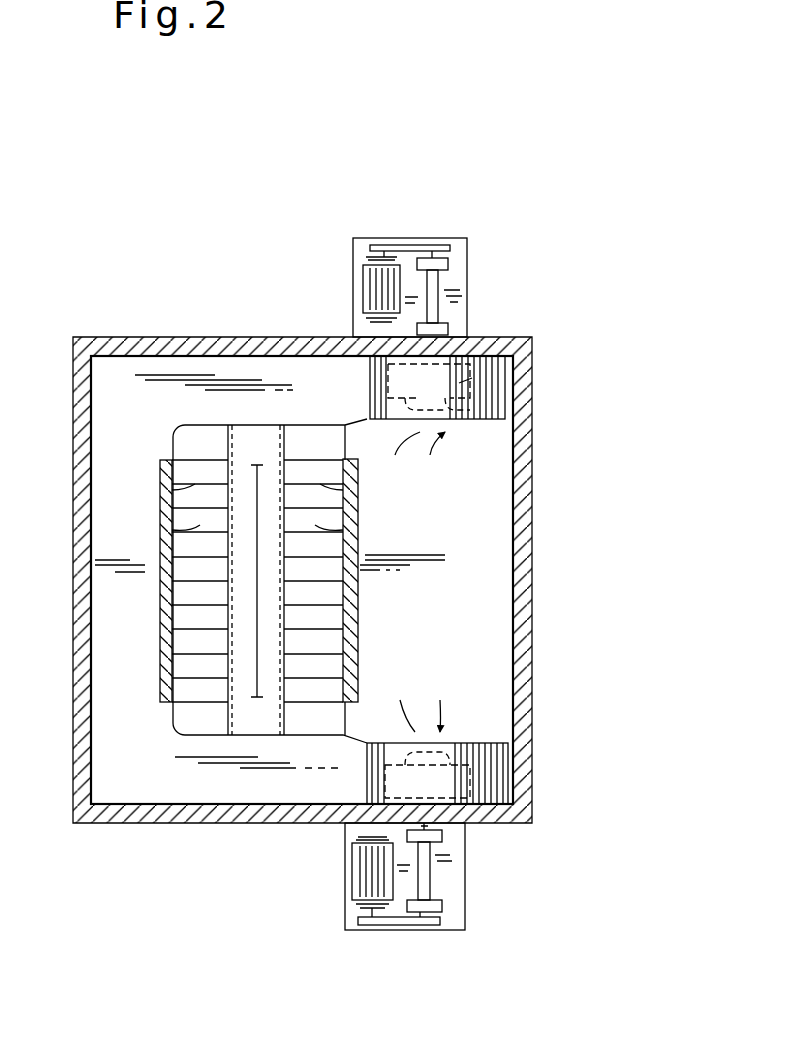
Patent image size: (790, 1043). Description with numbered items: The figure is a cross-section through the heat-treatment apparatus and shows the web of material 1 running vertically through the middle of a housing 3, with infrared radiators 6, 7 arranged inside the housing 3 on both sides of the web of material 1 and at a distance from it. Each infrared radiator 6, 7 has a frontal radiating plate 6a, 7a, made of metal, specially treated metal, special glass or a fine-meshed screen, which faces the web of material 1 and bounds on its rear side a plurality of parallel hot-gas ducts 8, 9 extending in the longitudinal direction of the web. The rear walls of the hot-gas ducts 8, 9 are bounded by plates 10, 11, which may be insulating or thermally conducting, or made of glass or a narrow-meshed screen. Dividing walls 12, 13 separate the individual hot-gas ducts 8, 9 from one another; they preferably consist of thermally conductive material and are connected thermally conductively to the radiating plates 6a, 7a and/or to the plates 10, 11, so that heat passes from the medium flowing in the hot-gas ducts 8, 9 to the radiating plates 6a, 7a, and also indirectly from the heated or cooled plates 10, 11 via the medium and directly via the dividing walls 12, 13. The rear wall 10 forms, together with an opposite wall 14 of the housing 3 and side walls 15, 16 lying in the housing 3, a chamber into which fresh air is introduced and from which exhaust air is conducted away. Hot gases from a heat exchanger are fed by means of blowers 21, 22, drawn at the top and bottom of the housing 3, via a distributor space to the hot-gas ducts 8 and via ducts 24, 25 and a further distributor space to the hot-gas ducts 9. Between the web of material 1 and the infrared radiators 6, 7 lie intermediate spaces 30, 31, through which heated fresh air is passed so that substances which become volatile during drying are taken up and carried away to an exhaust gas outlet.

The web of material 1 is at (255, 688).
The housing 3 is at (122, 337).
The infrared radiator 6 is at (270, 712).
The radiating plate 6a is at (287, 442).
The infrared radiator 7 is at (237, 448).
The radiating plate 7a is at (227, 443).
The hot-gas ducts 8 is at (358, 620).
The hot-gas ducts 9 is at (200, 672).
The rear wall plate 10 is at (358, 480).
The rear wall plate 11 is at (160, 460).
The dividing walls 12 is at (358, 500).
The dividing walls 13 is at (195, 530).
The housing wall 14 is at (522, 522).
The side wall 15 is at (345, 425).
The side wall 16 is at (350, 733).
The blower 21 is at (458, 383).
The blower 22 is at (468, 778).
The duct 24 is at (242, 393).
The duct 25 is at (242, 775).
The intermediate space 30 is at (358, 592).
The intermediate space 31 is at (242, 592).